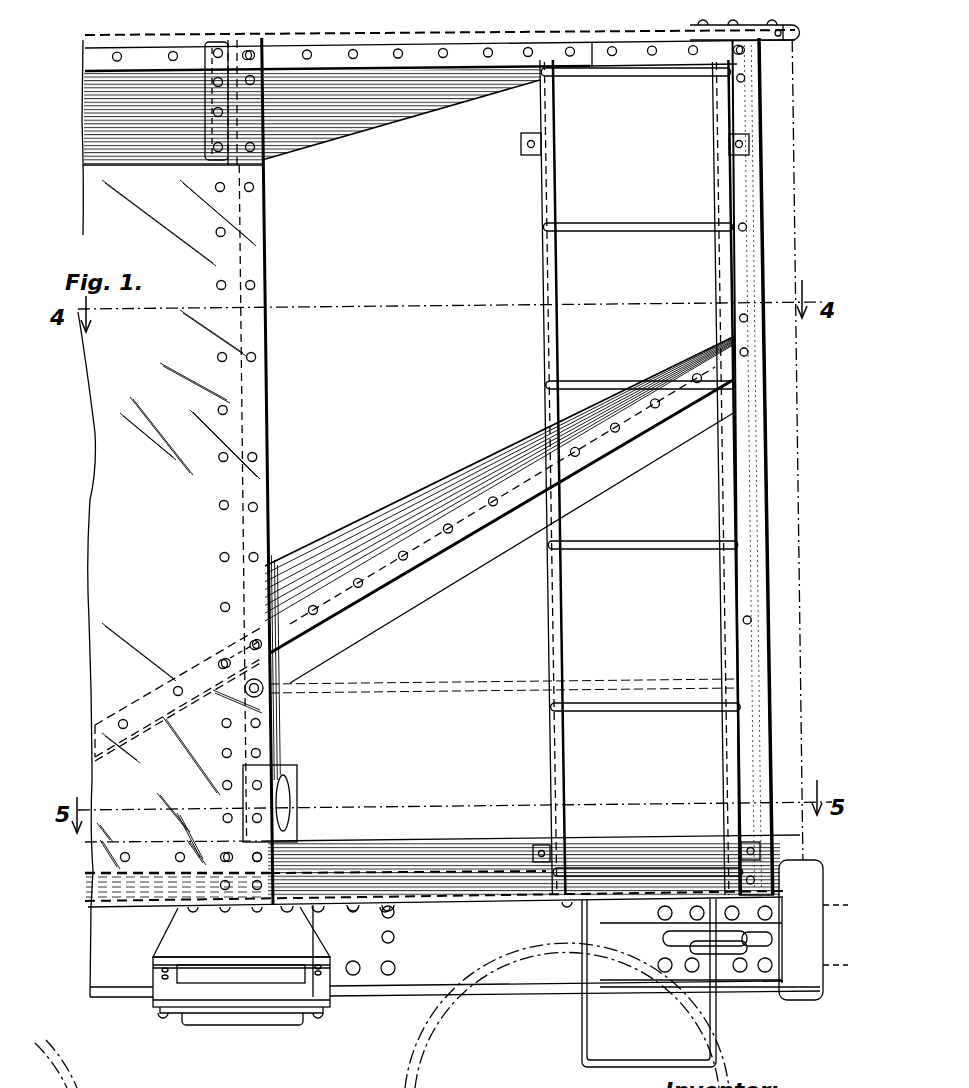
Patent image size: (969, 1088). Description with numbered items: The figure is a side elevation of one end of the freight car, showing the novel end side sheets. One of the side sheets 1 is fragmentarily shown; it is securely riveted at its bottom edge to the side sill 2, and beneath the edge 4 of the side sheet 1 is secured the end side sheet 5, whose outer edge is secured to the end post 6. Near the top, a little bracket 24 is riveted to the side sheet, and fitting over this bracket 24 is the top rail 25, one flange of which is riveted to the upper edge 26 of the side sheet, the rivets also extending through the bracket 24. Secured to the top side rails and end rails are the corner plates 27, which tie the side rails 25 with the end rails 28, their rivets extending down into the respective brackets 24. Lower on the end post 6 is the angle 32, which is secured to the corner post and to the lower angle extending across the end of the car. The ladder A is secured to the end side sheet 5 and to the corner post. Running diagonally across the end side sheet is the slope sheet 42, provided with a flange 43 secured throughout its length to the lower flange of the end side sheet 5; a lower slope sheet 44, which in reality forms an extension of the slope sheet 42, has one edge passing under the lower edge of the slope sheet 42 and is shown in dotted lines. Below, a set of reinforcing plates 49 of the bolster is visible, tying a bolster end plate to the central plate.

The side sheet 1 is at (170, 473).
The side sill 2 is at (177, 873).
The edge of the side sheet 4 is at (247, 518).
The end side sheet 5 is at (401, 211).
The end post 6 is at (765, 463).
The bracket 24 is at (205, 125).
The top rail 25 is at (152, 43).
The upper edge 26 is at (135, 57).
The corner plate 27 is at (784, 27).
The end rail 28 is at (778, 36).
The angle 32 is at (458, 860).
The slope sheet 42 is at (463, 527).
The flange 43 is at (233, 655).
The lower slope sheet 44 is at (142, 733).
The reinforcing plates 49 is at (273, 723).
The ladder A is at (558, 620).